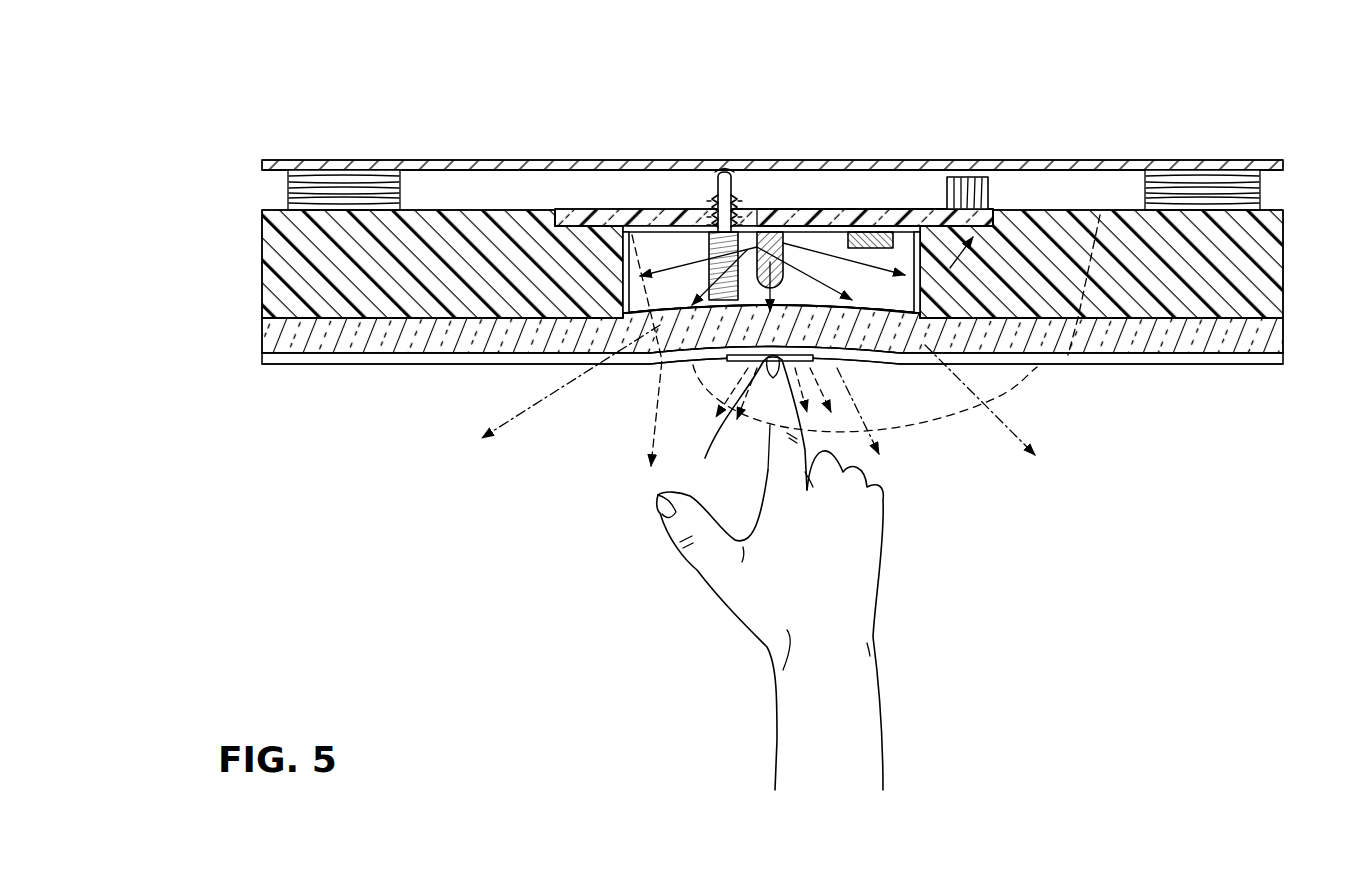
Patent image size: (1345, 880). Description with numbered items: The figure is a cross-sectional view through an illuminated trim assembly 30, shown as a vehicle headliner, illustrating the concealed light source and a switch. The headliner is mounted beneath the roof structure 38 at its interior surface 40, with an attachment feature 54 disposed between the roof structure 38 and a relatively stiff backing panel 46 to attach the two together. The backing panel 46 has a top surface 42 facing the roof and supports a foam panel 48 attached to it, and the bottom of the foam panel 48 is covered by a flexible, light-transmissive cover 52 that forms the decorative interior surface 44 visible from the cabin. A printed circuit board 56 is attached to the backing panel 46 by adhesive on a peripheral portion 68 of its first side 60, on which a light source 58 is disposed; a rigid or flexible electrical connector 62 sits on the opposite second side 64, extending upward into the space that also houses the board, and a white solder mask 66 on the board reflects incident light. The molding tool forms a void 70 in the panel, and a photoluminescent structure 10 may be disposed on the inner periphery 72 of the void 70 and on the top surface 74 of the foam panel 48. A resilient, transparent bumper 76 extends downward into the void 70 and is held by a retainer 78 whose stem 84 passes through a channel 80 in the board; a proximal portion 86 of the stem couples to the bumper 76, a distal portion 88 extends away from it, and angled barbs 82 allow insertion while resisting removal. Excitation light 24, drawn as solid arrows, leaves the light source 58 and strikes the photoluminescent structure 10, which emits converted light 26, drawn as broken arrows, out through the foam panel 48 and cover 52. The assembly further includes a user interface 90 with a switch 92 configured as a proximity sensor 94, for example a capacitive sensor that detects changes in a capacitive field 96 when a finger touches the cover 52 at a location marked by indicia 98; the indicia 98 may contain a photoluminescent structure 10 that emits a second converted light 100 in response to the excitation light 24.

The photoluminescent structure 10 is at (924, 242).
The excitation light 24 is at (855, 338).
The converted light 26 is at (995, 378).
The illuminated trim assembly 30 is at (258, 226).
The roof structure 38 is at (1116, 176).
The interior surface 40 is at (1116, 207).
The top surface 42 is at (490, 208).
The interior surface 44 is at (375, 363).
The backing panel 46 is at (1268, 288).
The foam panel 48 is at (1250, 347).
The cover 52 is at (1217, 366).
The attachment feature 54 is at (325, 187).
The printed circuit board 56 is at (899, 241).
The light source 58 is at (896, 226).
The first side 60 is at (990, 181).
The electrical connector 62 is at (992, 196).
The second side 64 is at (907, 225).
The white solder mask 66 is at (650, 225).
The peripheral portion 68 is at (574, 205).
The void 70 is at (902, 318).
The inner periphery 72 is at (620, 292).
The top surface 74 is at (648, 313).
The bumper 76 is at (682, 318).
The retainer 78 is at (742, 176).
The channel 80 is at (707, 222).
The barbs 82 is at (713, 200).
The stem 84 is at (779, 220).
The proximal portion 86 is at (786, 242).
The distal portion 88 is at (733, 160).
The user interface 90 is at (819, 371).
The switch 92 is at (946, 242).
The proximity sensor 94 is at (843, 326).
The capacitive field 96 is at (960, 420).
The indicia 98 is at (705, 458).
The second converted light 100 is at (760, 372).